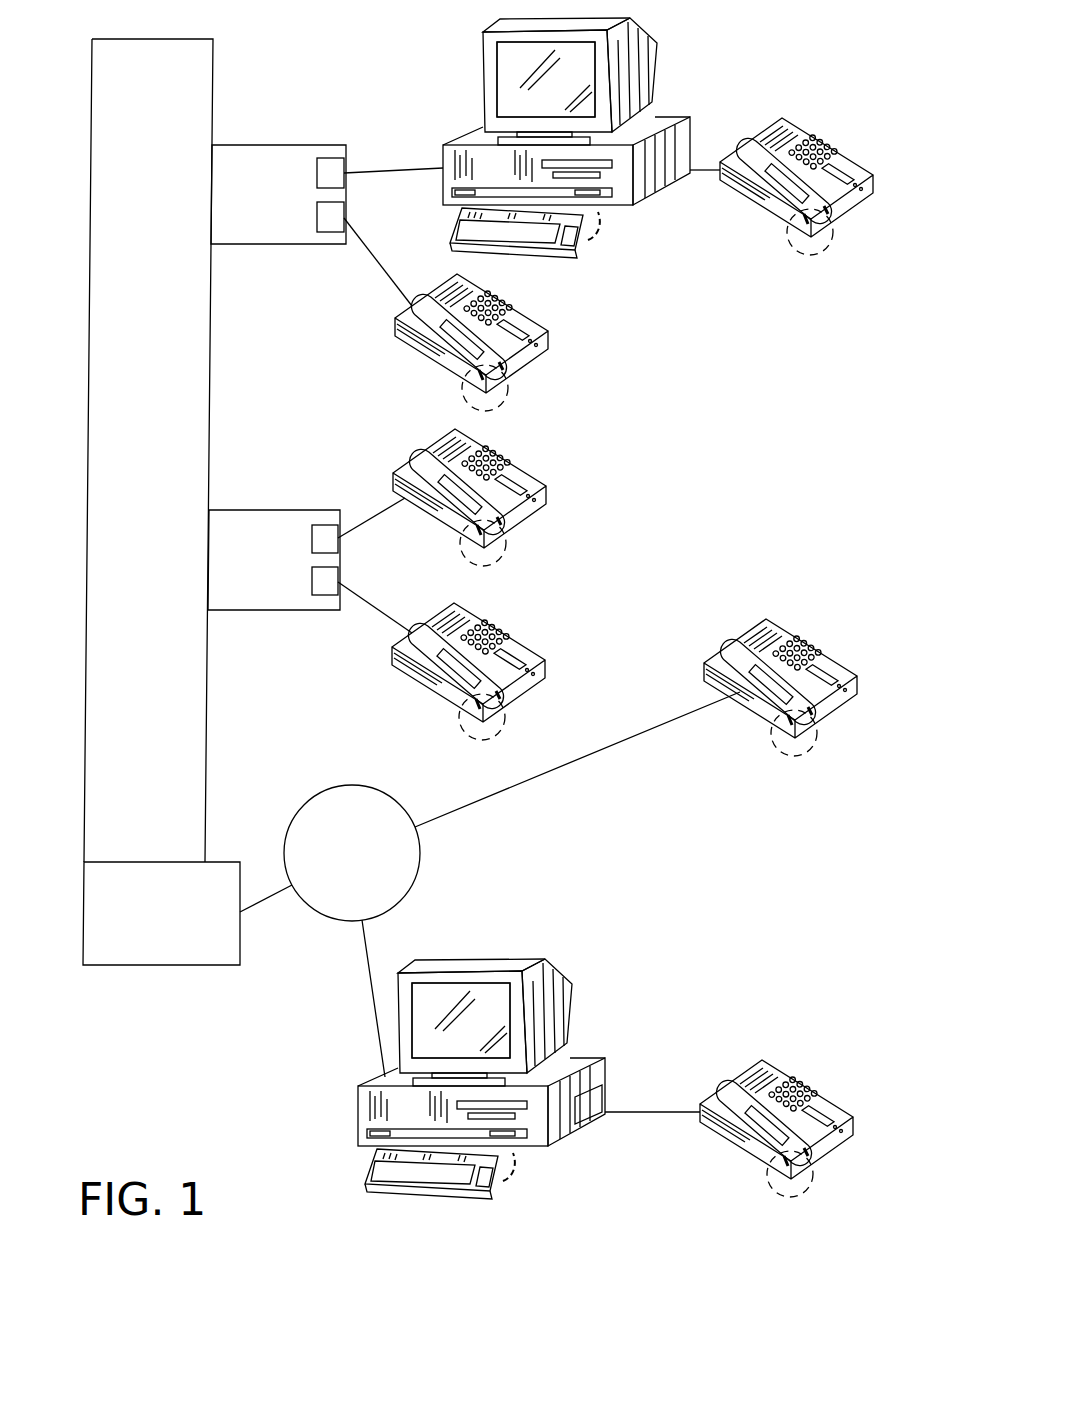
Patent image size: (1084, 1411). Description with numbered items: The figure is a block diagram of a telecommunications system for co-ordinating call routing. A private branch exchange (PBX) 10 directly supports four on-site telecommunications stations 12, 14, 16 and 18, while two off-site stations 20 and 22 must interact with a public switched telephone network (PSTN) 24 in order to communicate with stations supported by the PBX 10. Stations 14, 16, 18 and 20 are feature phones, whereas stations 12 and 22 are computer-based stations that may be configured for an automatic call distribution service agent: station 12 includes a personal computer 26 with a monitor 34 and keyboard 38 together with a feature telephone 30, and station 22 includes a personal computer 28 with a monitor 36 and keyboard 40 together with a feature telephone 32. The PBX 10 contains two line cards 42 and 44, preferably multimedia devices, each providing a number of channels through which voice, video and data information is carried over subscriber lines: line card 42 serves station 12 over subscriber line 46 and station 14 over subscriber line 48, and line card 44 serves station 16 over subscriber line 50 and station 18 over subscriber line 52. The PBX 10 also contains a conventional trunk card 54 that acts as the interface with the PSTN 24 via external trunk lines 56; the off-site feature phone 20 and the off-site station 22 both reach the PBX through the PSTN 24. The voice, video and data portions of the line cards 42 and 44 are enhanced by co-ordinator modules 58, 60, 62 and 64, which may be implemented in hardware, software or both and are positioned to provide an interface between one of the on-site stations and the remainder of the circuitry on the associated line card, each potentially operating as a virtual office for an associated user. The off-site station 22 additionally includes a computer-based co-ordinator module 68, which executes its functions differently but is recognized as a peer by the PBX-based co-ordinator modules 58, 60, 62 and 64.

The private branch exchange (PBX) 10 is at (209, 62).
The on-site telecommunications station 12 is at (795, 50).
The on-site telecommunications station 14 is at (540, 322).
The on-site telecommunications station 16 is at (515, 470).
The on-site telecommunications station 18 is at (512, 640).
The off-site telecommunications station 20 is at (792, 638).
The off-site telecommunications station 22 is at (738, 1000).
The public switched telephone network (PSTN) 24 is at (420, 858).
The personal computer 26 is at (470, 131).
The personal computer 28 is at (357, 1125).
The feature telephone 30 is at (826, 155).
The feature telephone 32 is at (808, 1100).
The computer monitor 34 is at (505, 58).
The computer monitor 36 is at (490, 1000).
The keyboard 38 is at (530, 240).
The keyboard 40 is at (370, 1182).
The line card 42 is at (250, 244).
The line card 44 is at (245, 610).
The subscriber line 46 is at (370, 177).
The subscriber line 48 is at (372, 242).
The subscriber line 50 is at (363, 533).
The subscriber line 52 is at (366, 598).
The trunk card 54 is at (210, 965).
The external trunk lines 56 is at (262, 898).
The co-ordinator module 58 is at (326, 158).
The co-ordinator module 60 is at (326, 232).
The co-ordinator module 62 is at (325, 525).
The co-ordinator module 64 is at (322, 595).
The computer-based co-ordinator module 68 is at (604, 1098).